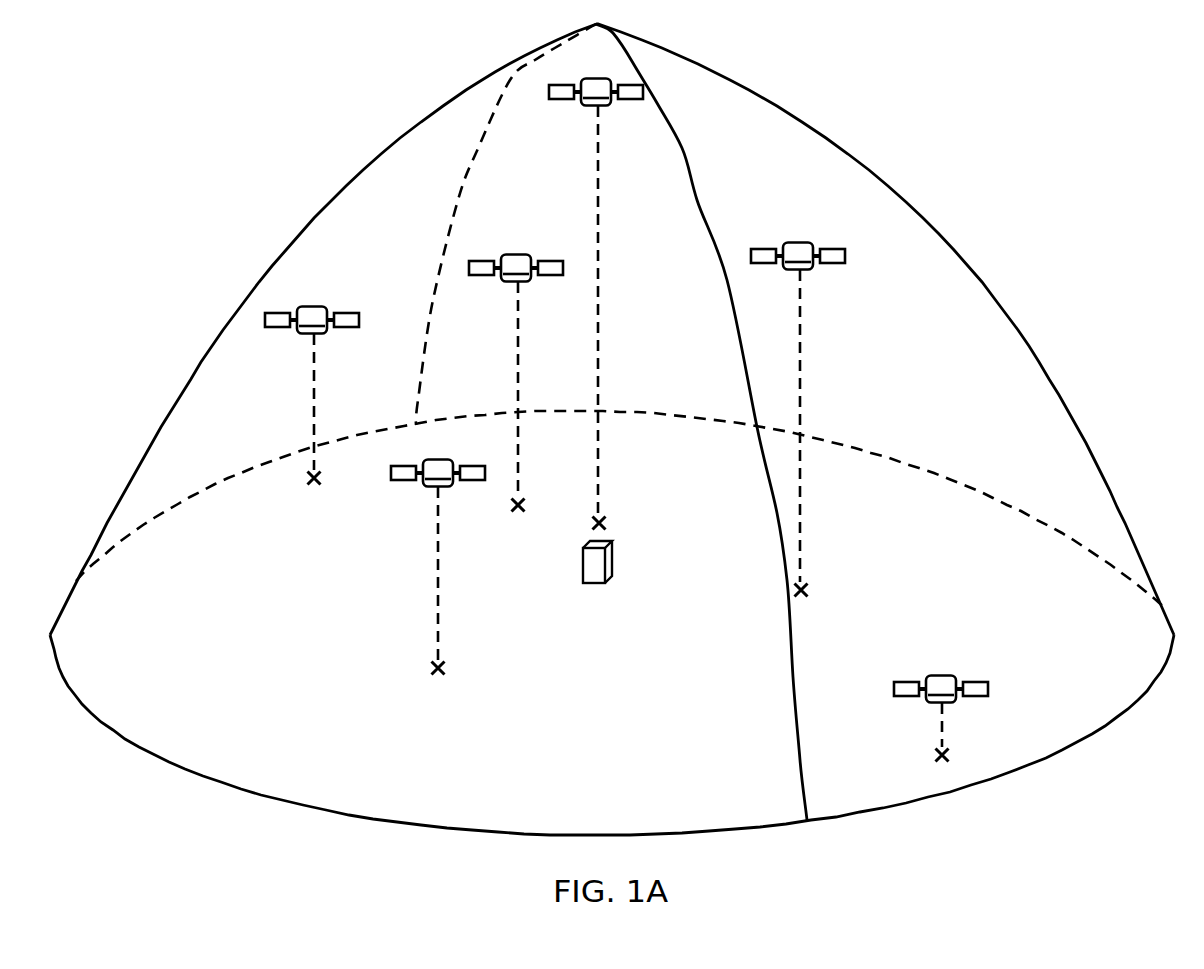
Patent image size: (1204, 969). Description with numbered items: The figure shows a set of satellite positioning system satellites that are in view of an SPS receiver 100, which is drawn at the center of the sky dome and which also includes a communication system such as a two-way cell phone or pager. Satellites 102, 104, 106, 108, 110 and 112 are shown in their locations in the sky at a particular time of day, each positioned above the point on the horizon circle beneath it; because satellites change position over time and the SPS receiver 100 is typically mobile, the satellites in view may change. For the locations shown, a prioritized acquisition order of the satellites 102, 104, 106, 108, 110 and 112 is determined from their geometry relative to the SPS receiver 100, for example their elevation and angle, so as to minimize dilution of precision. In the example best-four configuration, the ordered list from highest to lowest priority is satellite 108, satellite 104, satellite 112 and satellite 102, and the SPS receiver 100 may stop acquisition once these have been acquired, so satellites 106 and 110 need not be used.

The SPS receiver 100 is at (595, 584).
The satellite 102 is at (315, 306).
The satellite 104 is at (411, 481).
The satellite 106 is at (518, 254).
The satellite 108 is at (590, 108).
The satellite 110 is at (800, 242).
The satellite 112 is at (943, 675).